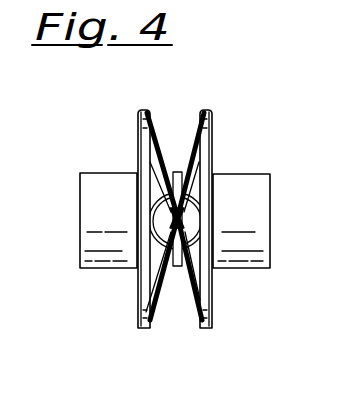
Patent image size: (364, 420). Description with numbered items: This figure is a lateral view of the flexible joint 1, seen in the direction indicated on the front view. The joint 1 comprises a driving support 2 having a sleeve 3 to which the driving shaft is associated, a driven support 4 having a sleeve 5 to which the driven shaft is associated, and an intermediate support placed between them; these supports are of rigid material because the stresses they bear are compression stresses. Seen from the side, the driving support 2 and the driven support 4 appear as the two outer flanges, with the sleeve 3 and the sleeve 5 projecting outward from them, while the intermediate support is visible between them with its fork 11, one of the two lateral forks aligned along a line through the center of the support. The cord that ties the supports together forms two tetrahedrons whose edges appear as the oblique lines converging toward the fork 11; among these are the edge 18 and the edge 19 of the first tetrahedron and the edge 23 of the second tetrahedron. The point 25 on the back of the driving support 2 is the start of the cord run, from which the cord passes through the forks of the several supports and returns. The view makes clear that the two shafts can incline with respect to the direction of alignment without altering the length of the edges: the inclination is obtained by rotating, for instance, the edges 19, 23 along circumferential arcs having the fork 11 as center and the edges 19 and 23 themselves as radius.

The joint 1 is at (181, 232).
The driving support 2 is at (140, 135).
The sleeve 3 is at (98, 257).
The driven support 4 is at (212, 155).
The sleeve 5 is at (262, 246).
The fork 11 is at (170, 215).
The edge 18 is at (163, 158).
The edge 19 is at (151, 298).
The edge 23 is at (195, 292).
The point 25 is at (140, 295).